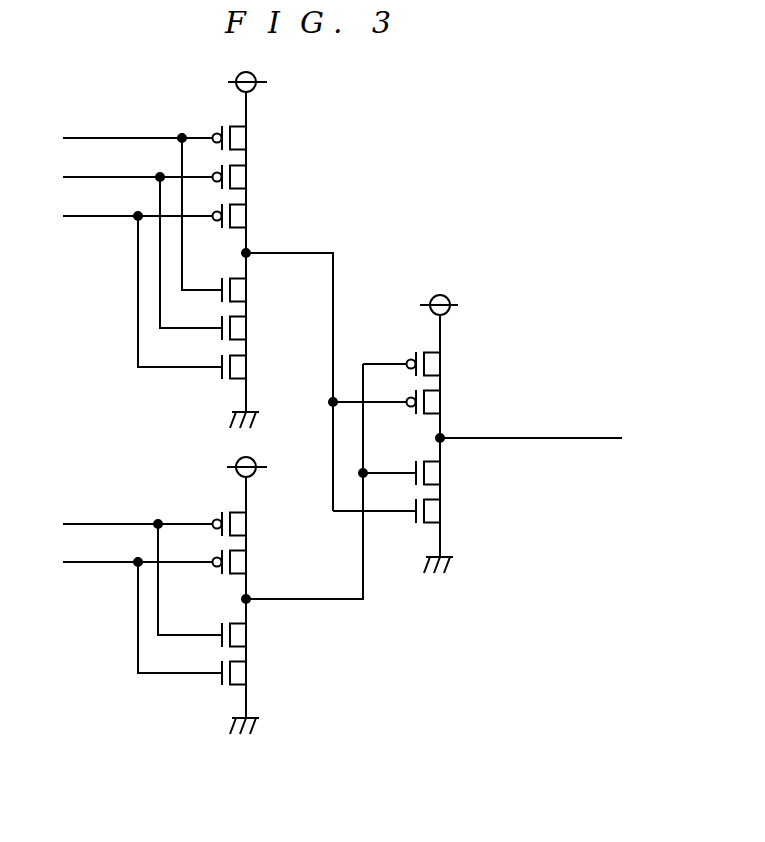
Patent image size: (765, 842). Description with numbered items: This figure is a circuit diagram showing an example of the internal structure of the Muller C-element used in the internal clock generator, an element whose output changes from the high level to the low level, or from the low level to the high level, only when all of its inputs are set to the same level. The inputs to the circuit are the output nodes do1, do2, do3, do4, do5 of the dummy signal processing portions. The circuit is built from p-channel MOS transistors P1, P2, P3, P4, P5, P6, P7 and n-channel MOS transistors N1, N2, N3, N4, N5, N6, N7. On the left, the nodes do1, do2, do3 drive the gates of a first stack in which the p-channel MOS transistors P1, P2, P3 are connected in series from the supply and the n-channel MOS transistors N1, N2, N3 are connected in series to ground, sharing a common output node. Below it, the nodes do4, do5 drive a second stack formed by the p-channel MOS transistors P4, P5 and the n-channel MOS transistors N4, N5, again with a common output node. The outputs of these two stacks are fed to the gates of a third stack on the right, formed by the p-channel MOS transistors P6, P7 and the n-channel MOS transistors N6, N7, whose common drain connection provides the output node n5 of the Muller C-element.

The node of the output of the dummy signal processing portion do1 is at (85, 137).
The node of the output of the dummy signal processing portion do2 is at (85, 176).
The node of the output of the dummy signal processing portion do3 is at (85, 215).
The node of the output of the dummy signal processing portion do4 is at (85, 523).
The node of the output of the dummy signal processing portion do5 is at (85, 561).
The p-channel MOS transistor P1 is at (244, 141).
The p-channel MOS transistor P2 is at (244, 180).
The p-channel MOS transistor P3 is at (244, 219).
The p-channel MOS transistor P4 is at (244, 526).
The p-channel MOS transistor P5 is at (244, 564).
The p-channel MOS transistor P6 is at (440, 362).
The p-channel MOS transistor P7 is at (440, 400).
The n-channel MOS transistor N1 is at (243, 292).
The n-channel MOS transistor N2 is at (243, 330).
The n-channel MOS transistor N3 is at (243, 369).
The n-channel MOS transistor N4 is at (244, 637).
The n-channel MOS transistor N5 is at (244, 675).
The n-channel MOS transistor N6 is at (435, 475).
The n-channel MOS transistor N7 is at (435, 513).
The output node n5 is at (545, 438).